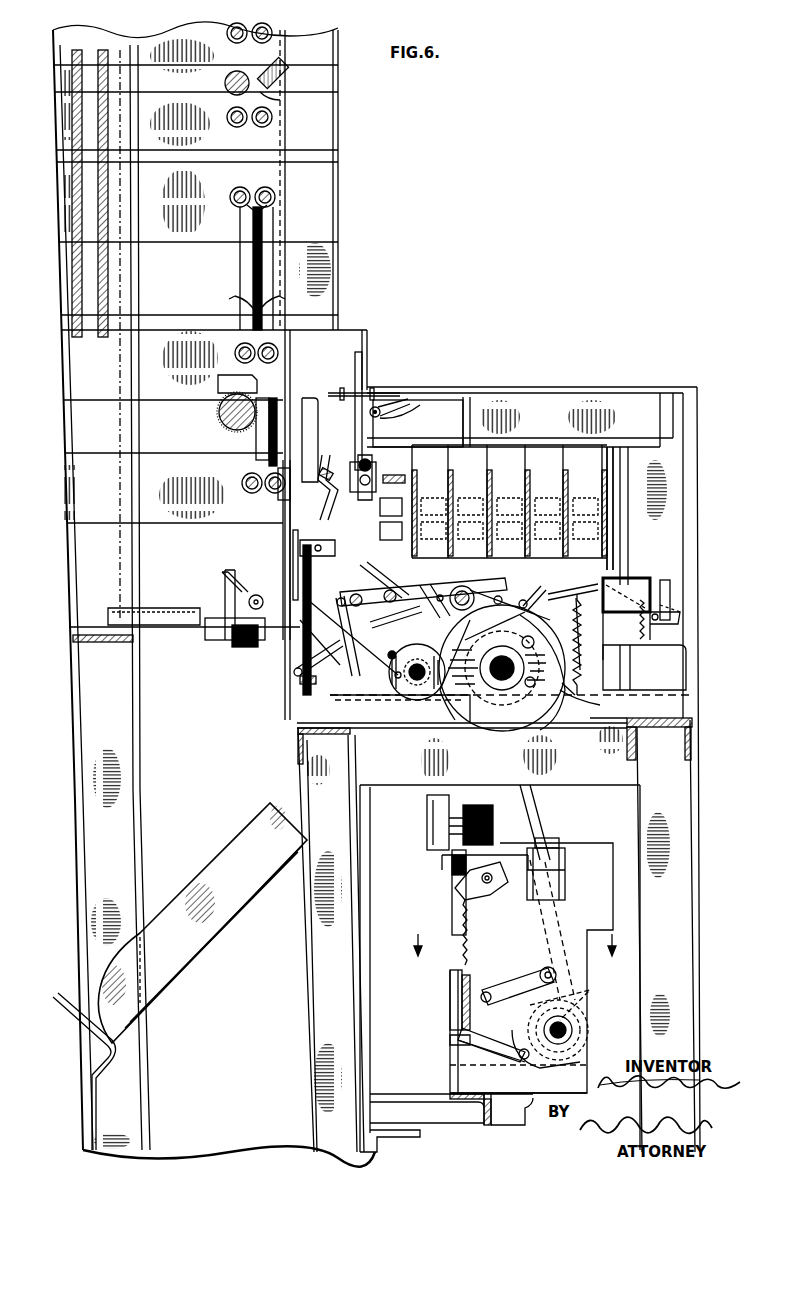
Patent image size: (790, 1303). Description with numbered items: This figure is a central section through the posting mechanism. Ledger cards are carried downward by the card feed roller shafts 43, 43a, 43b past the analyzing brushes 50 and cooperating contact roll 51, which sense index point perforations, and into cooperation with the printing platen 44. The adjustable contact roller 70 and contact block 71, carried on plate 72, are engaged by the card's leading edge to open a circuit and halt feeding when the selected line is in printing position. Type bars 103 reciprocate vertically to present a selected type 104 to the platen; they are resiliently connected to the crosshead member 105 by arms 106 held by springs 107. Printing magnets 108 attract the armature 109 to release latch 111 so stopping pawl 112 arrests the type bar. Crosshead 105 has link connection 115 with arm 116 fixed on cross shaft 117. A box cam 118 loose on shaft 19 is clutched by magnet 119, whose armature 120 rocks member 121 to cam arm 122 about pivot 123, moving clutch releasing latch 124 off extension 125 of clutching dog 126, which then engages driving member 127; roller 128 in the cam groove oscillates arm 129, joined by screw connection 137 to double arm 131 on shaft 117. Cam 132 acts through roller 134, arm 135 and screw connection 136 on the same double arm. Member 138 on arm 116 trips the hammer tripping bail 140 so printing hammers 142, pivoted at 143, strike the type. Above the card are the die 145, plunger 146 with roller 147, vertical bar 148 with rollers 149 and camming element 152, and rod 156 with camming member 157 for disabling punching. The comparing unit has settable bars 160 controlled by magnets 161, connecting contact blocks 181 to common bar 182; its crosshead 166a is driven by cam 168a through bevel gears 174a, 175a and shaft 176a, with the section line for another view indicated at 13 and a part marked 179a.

The card feed roller shafts 43 is at (228, 35).
The contact roll 51 is at (225, 83).
The analyzing brushes 50 is at (281, 98).
The card feed roller shafts 43a is at (242, 345).
The die 145 is at (237, 384).
The printing platen 44 is at (218, 413).
The type 104 is at (256, 432).
The card feed roller shafts 43b is at (247, 477).
The hammer pivot 143 is at (278, 492).
The type bars 103 is at (283, 513).
The stopping pawl 112 is at (293, 556).
The latch 111 is at (316, 553).
The link connection 115 is at (336, 612).
The plate 72 is at (228, 595).
The contact roller 70 is at (255, 595).
The contact block 71 is at (240, 622).
The crosshead member 105 is at (280, 646).
The arms 106 is at (296, 671).
The springs 107 is at (340, 642).
The arm 135 is at (395, 654).
The roller 134 is at (396, 674).
The adjustable screw connection 136 is at (396, 620).
The member 138 is at (396, 590).
The arm 116 is at (410, 594).
The double arm 131 is at (441, 596).
The cross shaft 117 is at (476, 584).
The arm 129 is at (500, 596).
The adjustable screw connection 137 is at (536, 592).
The roller 128 is at (560, 606).
The pivot 123 is at (602, 590).
The magnet 119 is at (636, 596).
The armature 120 is at (670, 586).
The arm 122 is at (668, 612).
The member 121 is at (682, 618).
The clutch releasing latch 124 is at (590, 662).
The extension 125 is at (580, 700).
The cam 132 is at (417, 702).
The driving member 127 is at (448, 722).
The shaft 19 is at (470, 716).
The clutching dog 126 is at (500, 720).
The box cam 118 is at (540, 718).
The printing magnets 108 is at (400, 507).
The armature 109 is at (363, 479).
The hammer tripping bail structure 140 is at (325, 470).
The printing hammers 142 is at (318, 428).
The plunger 146 is at (352, 393).
The roller 147 is at (354, 390).
The camming element 152 is at (376, 406).
The rod 156 is at (384, 406).
The camming member 157 is at (395, 412).
The vertical bar 148 is at (382, 420).
The rollers 149 is at (383, 460).
The common conducting bar 182 is at (463, 822).
The contact blocks 181 is at (449, 833).
The magnets 161 is at (548, 858).
The differentially settable bars 160 is at (454, 890).
The shaft 176a is at (550, 938).
The section line 13 is at (516, 956).
The bevel gear 175a is at (575, 1003).
The bevel gear 174a is at (577, 1012).
The pivot 179a is at (572, 1027).
The cam 168a is at (584, 1035).
The crosshead 166a is at (458, 1035).